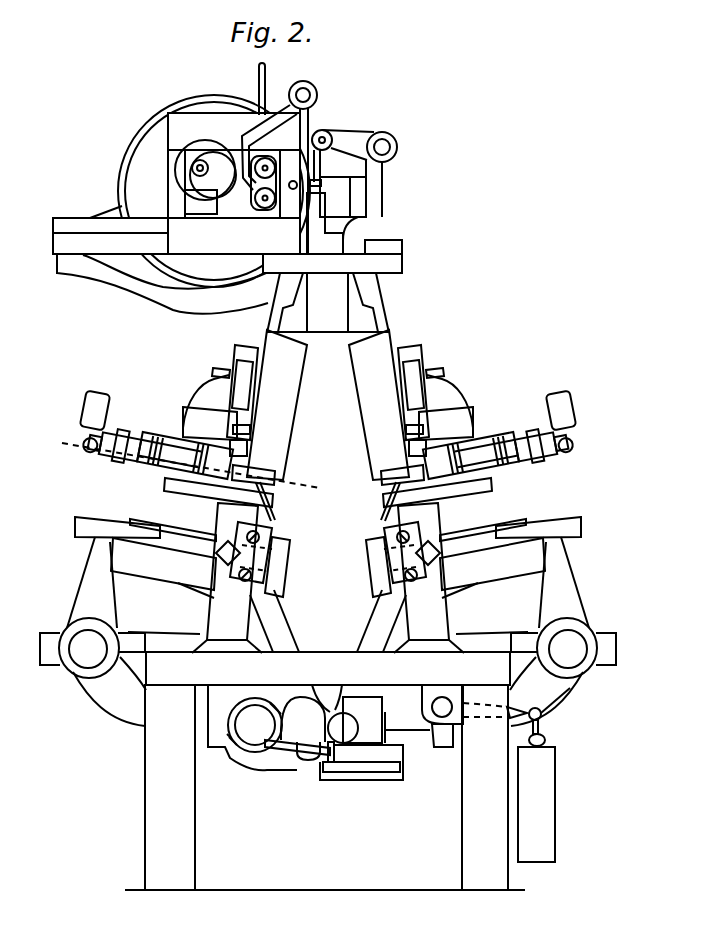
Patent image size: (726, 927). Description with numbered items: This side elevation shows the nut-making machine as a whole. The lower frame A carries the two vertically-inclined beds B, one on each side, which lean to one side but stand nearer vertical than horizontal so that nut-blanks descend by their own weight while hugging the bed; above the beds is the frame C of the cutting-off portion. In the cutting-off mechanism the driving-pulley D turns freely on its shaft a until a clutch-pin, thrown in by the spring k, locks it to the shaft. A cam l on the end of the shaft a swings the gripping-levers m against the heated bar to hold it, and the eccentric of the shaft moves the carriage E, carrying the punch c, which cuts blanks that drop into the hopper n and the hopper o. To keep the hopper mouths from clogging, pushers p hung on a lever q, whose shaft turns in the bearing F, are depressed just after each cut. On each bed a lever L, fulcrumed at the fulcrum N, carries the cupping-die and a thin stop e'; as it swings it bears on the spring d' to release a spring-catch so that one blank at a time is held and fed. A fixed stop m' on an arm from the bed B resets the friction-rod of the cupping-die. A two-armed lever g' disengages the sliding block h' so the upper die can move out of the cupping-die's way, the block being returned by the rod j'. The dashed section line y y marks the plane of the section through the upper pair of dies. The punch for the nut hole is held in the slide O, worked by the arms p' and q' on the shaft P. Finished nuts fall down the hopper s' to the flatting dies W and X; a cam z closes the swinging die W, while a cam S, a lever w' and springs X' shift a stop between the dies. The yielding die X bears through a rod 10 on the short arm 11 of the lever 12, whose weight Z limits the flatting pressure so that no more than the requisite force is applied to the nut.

The driving-pulley D is at (214, 191).
The shaft a is at (199, 168).
The cam l is at (205, 170).
The carriage E is at (261, 159).
The frame of the cutting-off portion C is at (227, 213).
The gripping-levers m is at (298, 158).
The punch c is at (290, 187).
The lever q is at (343, 145).
The bearing F is at (359, 193).
The pushers p is at (326, 166).
The spring k is at (331, 168).
The hopper n is at (285, 303).
The hopper o is at (371, 303).
The vertically-inclined bed B is at (297, 485).
The fulcrum N is at (313, 392).
The spring d' is at (303, 407).
The thin stop e' is at (336, 450).
The lever L is at (294, 452).
The stop m' is at (323, 422).
The two-armed lever g' is at (318, 493).
The sliding block h' is at (324, 479).
The rod j' is at (315, 508).
The slide O is at (302, 554).
The hopper s' is at (328, 621).
The section line y is at (188, 466).
The arm p' is at (328, 621).
The shaft P is at (328, 648).
The arm q' is at (328, 641).
The lower frame A is at (325, 771).
The cam S is at (254, 725).
The flatting-die W is at (311, 722).
The flatting-die X is at (356, 720).
The cam z is at (297, 747).
The lever w' is at (338, 752).
The spring X' is at (361, 762).
The rod 10 is at (407, 736).
The short arm 11 is at (442, 716).
The lever 12 is at (495, 710).
The weight Z is at (544, 775).